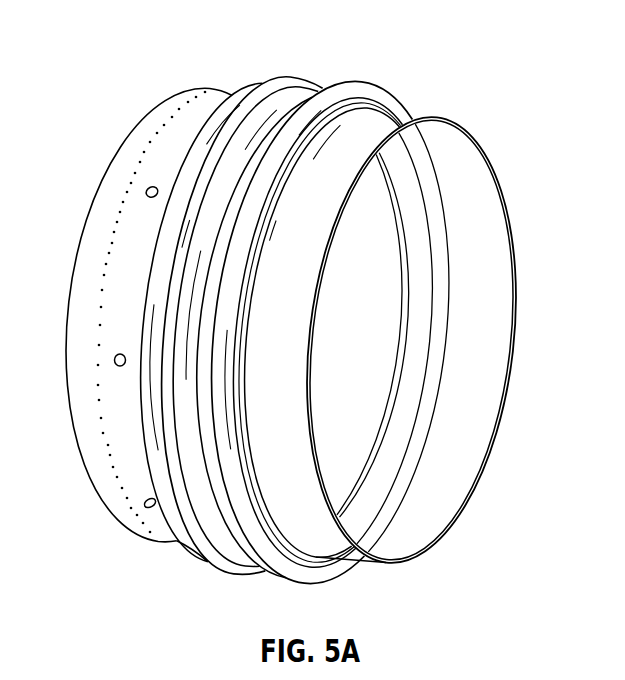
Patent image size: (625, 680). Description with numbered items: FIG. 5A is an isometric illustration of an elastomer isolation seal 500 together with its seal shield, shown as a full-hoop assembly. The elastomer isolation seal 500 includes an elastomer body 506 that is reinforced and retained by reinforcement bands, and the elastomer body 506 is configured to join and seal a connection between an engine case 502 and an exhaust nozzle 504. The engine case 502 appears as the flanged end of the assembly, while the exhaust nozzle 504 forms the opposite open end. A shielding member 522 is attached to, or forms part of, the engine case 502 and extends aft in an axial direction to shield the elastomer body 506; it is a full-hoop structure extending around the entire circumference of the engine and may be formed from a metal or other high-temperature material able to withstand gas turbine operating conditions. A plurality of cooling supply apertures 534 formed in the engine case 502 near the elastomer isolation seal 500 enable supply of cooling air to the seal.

The elastomer isolation seal 500 is at (378, 55).
The engine case 502 is at (182, 88).
The exhaust nozzle 504 is at (414, 117).
The elastomer body 506 is at (280, 72).
The shielding member 522 is at (378, 293).
The cooling supply apertures 534 is at (146, 184).